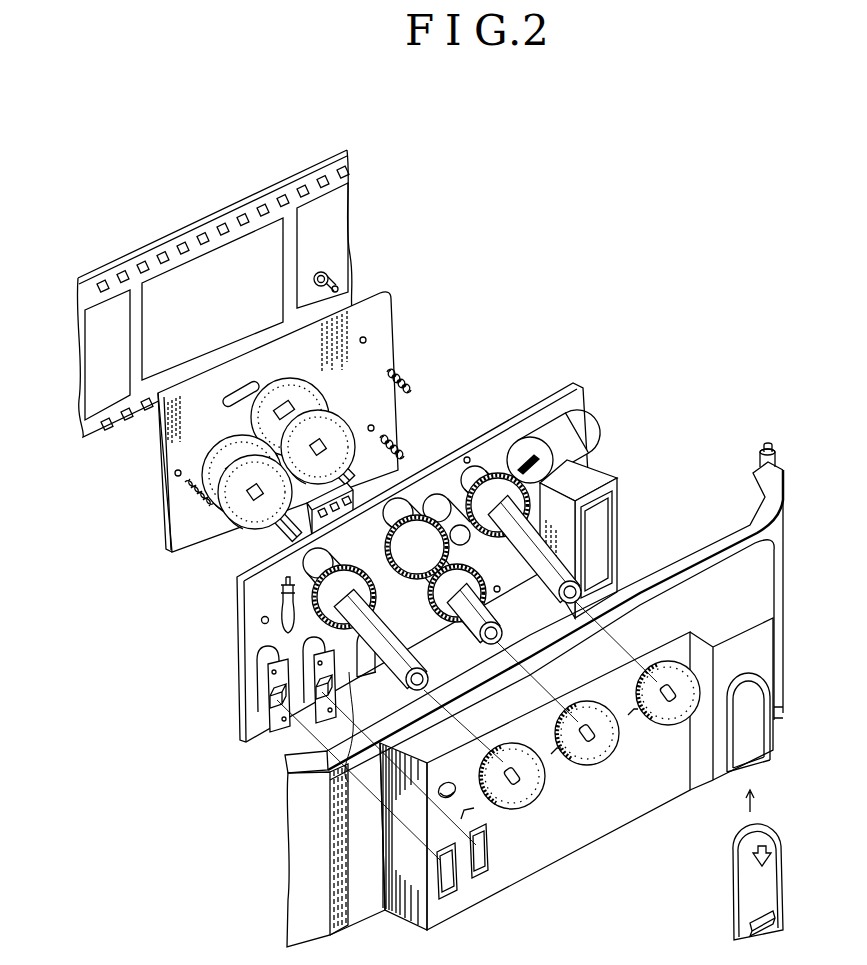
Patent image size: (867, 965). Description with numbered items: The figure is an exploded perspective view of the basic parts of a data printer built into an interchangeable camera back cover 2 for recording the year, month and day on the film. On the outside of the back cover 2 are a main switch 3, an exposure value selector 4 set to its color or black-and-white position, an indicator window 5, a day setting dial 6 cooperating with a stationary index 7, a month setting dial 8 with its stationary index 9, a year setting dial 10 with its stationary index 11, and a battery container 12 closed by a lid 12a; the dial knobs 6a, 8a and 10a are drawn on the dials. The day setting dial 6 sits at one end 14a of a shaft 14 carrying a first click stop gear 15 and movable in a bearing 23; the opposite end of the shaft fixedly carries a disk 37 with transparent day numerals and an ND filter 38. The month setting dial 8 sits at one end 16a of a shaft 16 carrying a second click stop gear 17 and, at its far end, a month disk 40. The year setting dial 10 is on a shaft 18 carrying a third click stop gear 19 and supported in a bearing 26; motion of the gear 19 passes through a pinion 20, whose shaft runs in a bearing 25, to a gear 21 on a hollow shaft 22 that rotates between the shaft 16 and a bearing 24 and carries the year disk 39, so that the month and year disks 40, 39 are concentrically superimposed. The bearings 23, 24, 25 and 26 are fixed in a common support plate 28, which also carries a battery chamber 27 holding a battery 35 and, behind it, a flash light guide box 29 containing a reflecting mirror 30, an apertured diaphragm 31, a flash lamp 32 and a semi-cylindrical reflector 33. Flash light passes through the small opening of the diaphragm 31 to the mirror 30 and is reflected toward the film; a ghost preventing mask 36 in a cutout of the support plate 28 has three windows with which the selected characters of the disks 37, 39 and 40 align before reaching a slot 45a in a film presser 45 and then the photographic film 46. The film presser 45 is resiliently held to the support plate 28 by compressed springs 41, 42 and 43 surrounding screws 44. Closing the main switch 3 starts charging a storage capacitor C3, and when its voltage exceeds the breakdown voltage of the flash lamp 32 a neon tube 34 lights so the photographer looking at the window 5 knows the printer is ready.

The back cover 2 is at (294, 899).
The main switch 3 is at (272, 713).
The exposure value selector 4 is at (320, 716).
The indicator window 5 is at (438, 793).
The day setting dial 6 is at (518, 803).
The day dial knob 6a is at (523, 784).
The stationary index 7 is at (466, 801).
The month setting dial 8 is at (596, 763).
The month dial knob 8a is at (584, 726).
The stationary index 9 is at (563, 758).
The year setting dial 10 is at (656, 724).
The year dial knob 10a is at (673, 703).
The stationary index 11 is at (628, 714).
The battery container 12 is at (739, 646).
The battery chamber lid 12a is at (741, 876).
The shaft 14 is at (423, 678).
The end of shaft 14a is at (459, 702).
The first click stop gear 15 is at (283, 599).
The shaft 16 is at (482, 613).
The end of shaft 16a is at (501, 670).
The second click stop gear 17 is at (487, 641).
The shaft 18 is at (571, 601).
The third click stop gear 19 is at (492, 529).
The pinion 20 is at (464, 538).
The gear 21 is at (434, 524).
The hollow shaft 22 is at (450, 604).
The bearing 23 is at (308, 569).
The bearing 24 is at (404, 500).
The bearing 25 is at (442, 496).
The bearing 26 is at (482, 466).
The battery chamber 27 is at (604, 476).
The support plate 28 is at (578, 400).
The flash light guide box 29 is at (406, 580).
The reflecting mirror 30 is at (412, 559).
The apertured diaphragm 31 is at (357, 657).
The flash lamp 32 is at (362, 762).
The semi-cylindrical reflector 33 is at (401, 691).
The neon tube 34 is at (261, 621).
The battery 35 is at (606, 531).
The ghost preventing mask 36 is at (354, 494).
The disk 37 is at (240, 512).
The ND filter 38 is at (232, 457).
The disk 39 is at (332, 411).
The disk 40 is at (292, 379).
The compressed spring 41 is at (399, 375).
The compressed spring 42 is at (385, 434).
The compressed spring 43 is at (186, 494).
The screw 44 is at (323, 272).
The film presser 45 is at (391, 311).
The slot 45a is at (226, 401).
The photographic film 46 is at (340, 207).
The storage capacitor C3 is at (589, 431).